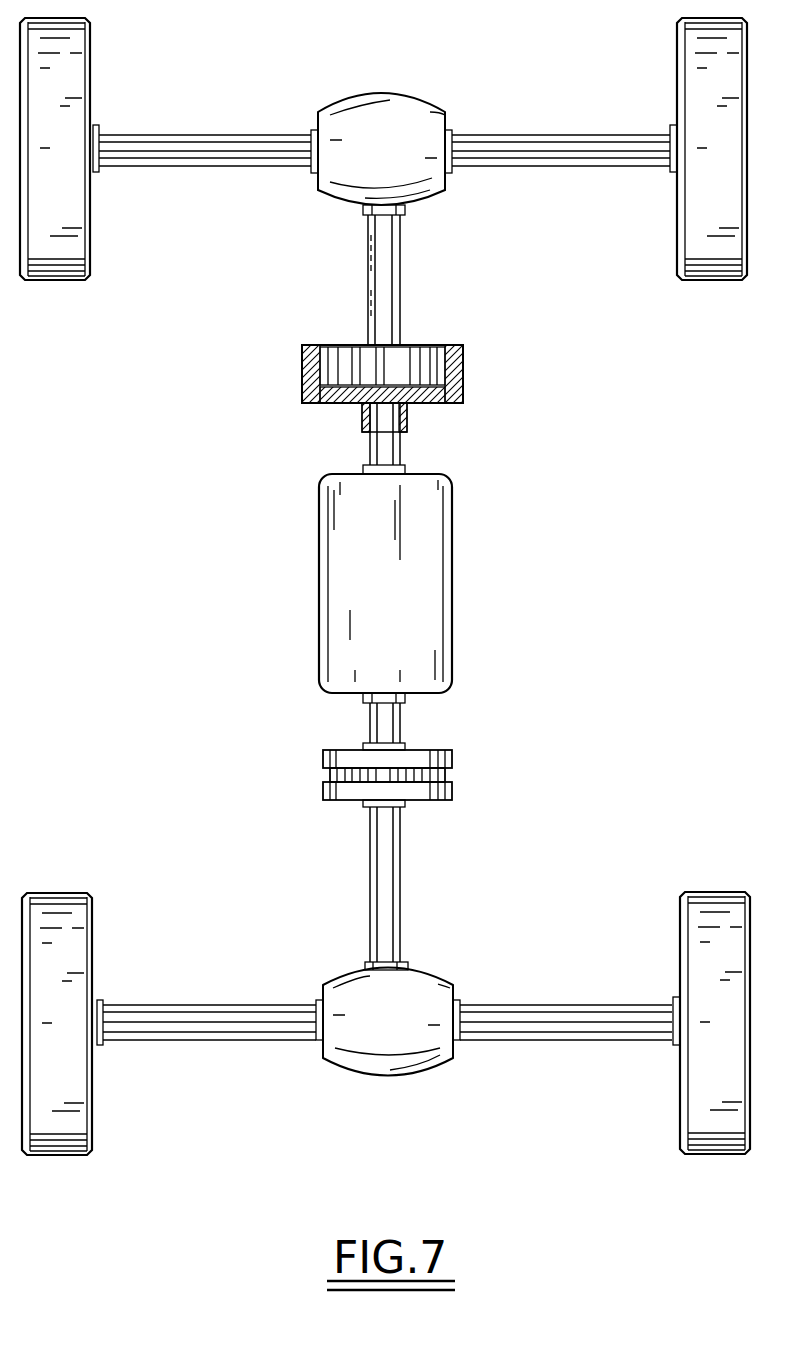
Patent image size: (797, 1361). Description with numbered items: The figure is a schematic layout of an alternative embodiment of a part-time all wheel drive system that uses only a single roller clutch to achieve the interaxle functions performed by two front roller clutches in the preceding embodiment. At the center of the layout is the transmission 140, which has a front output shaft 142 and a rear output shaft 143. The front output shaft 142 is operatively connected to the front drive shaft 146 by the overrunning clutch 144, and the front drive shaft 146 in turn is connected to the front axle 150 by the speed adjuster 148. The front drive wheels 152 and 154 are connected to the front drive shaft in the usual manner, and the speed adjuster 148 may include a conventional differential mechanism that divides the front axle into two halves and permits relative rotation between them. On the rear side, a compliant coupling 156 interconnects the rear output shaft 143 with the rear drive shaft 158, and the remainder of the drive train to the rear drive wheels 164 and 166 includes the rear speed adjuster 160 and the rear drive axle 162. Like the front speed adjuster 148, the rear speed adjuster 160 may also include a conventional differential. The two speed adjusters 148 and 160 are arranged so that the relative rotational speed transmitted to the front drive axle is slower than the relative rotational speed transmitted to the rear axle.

The transmission 140 is at (405, 602).
The front output shaft 142 is at (400, 447).
The rear output shaft 143 is at (370, 718).
The overrunning clutch 144 is at (466, 365).
The front drive shaft 146 is at (400, 272).
The speed adjuster 148 is at (405, 167).
The front axle 150 is at (200, 137).
The front drive wheel 152 is at (75, 164).
The front drive wheel 154 is at (737, 164).
The compliant coupling 156 is at (453, 757).
The rear drive shaft 158 is at (400, 870).
The rear speed adjuster 160 is at (412, 1036).
The rear drive axle 162 is at (145, 1005).
The rear drive wheel 164 is at (80, 1039).
The rear drive wheel 166 is at (740, 1034).